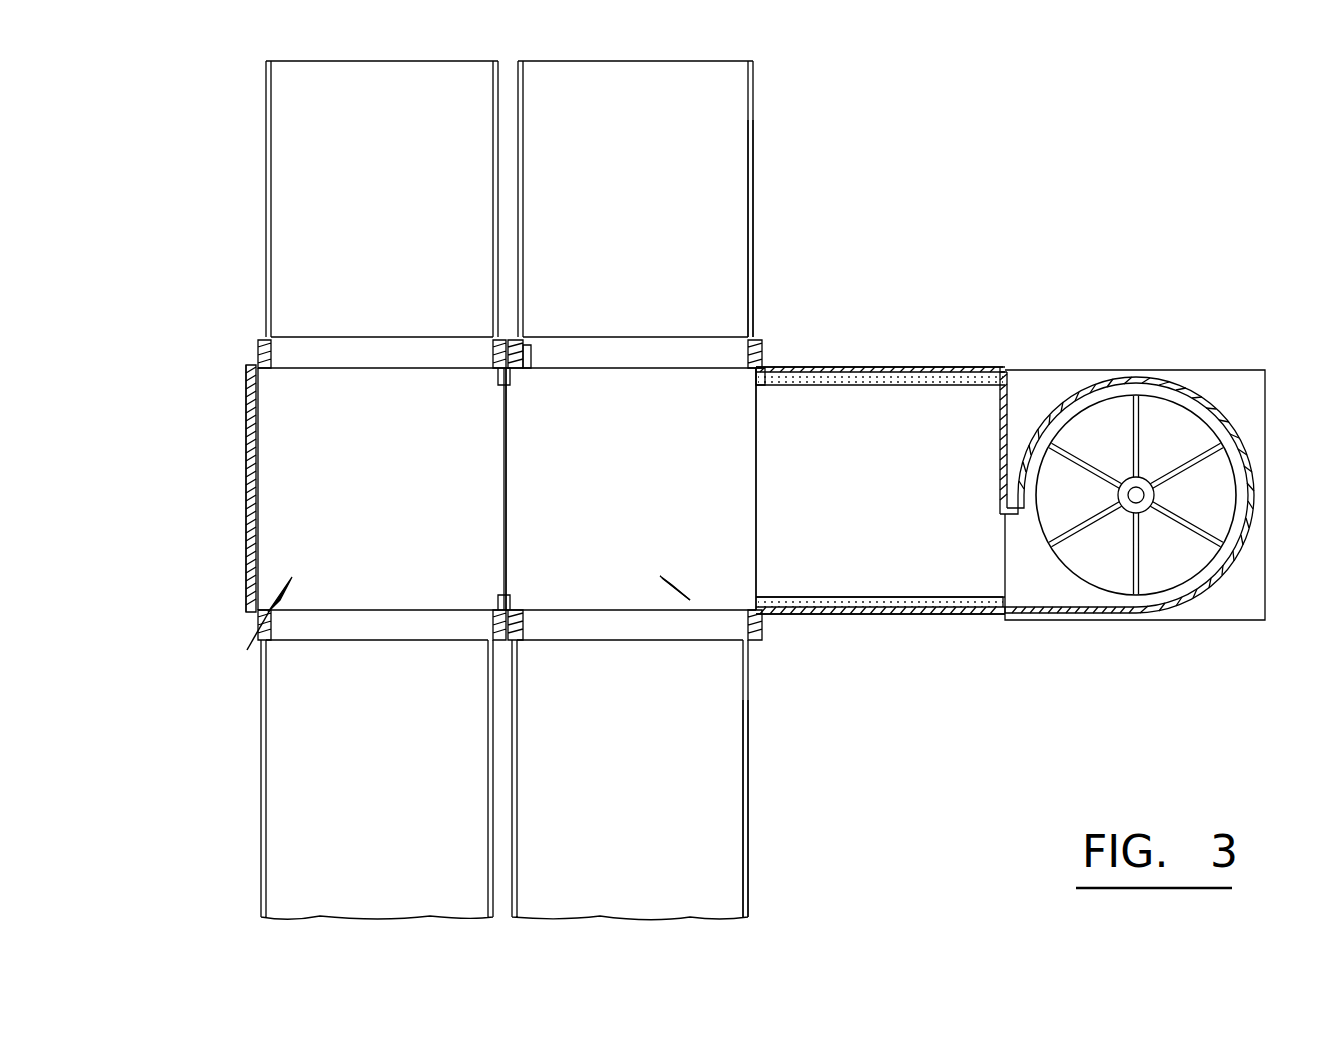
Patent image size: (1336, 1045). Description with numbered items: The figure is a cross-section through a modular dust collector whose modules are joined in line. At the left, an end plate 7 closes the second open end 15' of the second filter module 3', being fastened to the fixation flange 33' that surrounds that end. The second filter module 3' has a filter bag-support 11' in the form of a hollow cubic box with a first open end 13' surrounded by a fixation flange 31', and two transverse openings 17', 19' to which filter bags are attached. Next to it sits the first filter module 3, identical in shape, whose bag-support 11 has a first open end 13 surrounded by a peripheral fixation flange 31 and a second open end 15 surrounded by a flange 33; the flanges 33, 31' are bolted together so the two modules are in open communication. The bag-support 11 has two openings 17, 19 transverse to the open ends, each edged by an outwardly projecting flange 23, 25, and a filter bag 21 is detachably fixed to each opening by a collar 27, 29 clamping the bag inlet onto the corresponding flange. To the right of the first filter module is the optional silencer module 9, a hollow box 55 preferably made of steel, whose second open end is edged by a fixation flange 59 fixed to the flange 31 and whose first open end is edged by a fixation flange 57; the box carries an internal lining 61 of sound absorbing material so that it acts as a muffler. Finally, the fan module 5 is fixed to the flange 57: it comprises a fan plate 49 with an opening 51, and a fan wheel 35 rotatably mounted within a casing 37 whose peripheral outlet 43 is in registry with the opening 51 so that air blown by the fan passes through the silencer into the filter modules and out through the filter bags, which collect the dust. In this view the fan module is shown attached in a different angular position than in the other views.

The filter module 3 is at (728, 635).
The second filter module 3' is at (248, 633).
The fan module 5 is at (1208, 364).
The end plate 7 is at (240, 538).
The silencer module 9 is at (884, 474).
The filter bag-support 11 is at (631, 489).
The filter bag-support of second filter module 11' is at (382, 489).
The first open end 13 is at (720, 489).
The first open end of second filter module 13' is at (459, 489).
The second open end 15 is at (538, 489).
The second open end of second filter module 15' is at (285, 488).
The opening 17 is at (635, 199).
The opening of second filter module 17' is at (382, 238).
The opening 19 is at (630, 780).
The opening of second filter module 19' is at (377, 741).
The filter bag 21 is at (753, 192).
The flange 23 is at (535, 355).
The flange 25 is at (512, 610).
The collar 27 is at (762, 345).
The collar 29 is at (755, 635).
The peripheral fixation flange 31 is at (737, 392).
The fixation flange of second filter module 31' is at (481, 377).
The peripheral fixation flange 33 is at (540, 377).
The fixation flange of second filter module 33' is at (290, 377).
The fan wheel 35 is at (1142, 435).
The casing 37 is at (1223, 417).
The peripheral outlet 43 is at (1010, 583).
The fan plate 49 is at (1000, 415).
The opening 51 is at (1000, 545).
The hollow box 55 is at (905, 615).
The fixation flange 57 is at (1008, 600).
The fixation flange 59 is at (770, 385).
The internal lining 61 is at (868, 600).